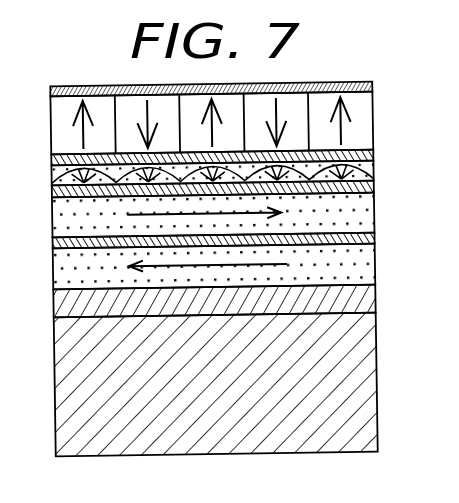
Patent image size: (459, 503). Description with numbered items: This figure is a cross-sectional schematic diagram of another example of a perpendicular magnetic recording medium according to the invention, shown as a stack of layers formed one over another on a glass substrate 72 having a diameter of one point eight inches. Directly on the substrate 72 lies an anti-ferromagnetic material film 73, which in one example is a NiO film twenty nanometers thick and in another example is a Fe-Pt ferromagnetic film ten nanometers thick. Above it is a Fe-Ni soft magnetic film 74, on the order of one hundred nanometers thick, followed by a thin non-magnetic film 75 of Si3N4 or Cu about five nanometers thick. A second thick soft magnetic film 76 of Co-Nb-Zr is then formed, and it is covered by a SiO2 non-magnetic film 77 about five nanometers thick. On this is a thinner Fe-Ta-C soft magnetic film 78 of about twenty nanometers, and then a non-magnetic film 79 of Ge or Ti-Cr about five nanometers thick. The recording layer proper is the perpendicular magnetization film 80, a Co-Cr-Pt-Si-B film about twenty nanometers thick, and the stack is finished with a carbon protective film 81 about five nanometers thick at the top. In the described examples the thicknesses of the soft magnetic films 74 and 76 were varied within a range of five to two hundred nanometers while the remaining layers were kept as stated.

The substrate 72 is at (375, 360).
The anti-ferromagnetic material film 73 is at (373, 298).
The soft magnetic film 74 is at (373, 268).
The non-magnetic film 75 is at (373, 238).
The soft magnetic film 76 is at (373, 207).
The non-magnetic film 77 is at (373, 186).
The soft magnetic film 78 is at (373, 170).
The non-magnetic film 79 is at (373, 152).
The perpendicular magnetization film 80 is at (373, 110).
The protective film 81 is at (373, 82).